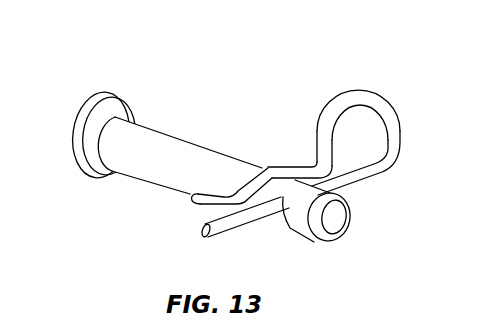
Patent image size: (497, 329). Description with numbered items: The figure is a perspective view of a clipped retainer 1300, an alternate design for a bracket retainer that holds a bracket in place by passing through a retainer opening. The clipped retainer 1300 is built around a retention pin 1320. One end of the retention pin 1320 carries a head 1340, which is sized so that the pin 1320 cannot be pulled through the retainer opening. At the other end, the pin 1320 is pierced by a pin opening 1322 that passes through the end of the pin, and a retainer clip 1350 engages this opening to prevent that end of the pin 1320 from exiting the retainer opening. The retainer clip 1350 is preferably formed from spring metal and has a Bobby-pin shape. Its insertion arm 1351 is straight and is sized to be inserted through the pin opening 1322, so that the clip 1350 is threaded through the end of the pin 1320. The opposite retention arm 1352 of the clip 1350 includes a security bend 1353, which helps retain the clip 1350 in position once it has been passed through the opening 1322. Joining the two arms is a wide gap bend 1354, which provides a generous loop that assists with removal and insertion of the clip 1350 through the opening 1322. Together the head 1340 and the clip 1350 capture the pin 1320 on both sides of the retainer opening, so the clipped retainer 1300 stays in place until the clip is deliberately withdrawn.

The clipped retainer 1300 is at (244, 62).
The retention pin 1320 is at (228, 183).
The pin opening 1322 is at (295, 215).
The head 1340 is at (97, 104).
The retainer clip 1350 is at (335, 145).
The insertion arm 1351 is at (361, 181).
The retention arm 1352 is at (282, 128).
The security bend 1353 is at (267, 167).
The wide gap bend 1354 is at (400, 124).